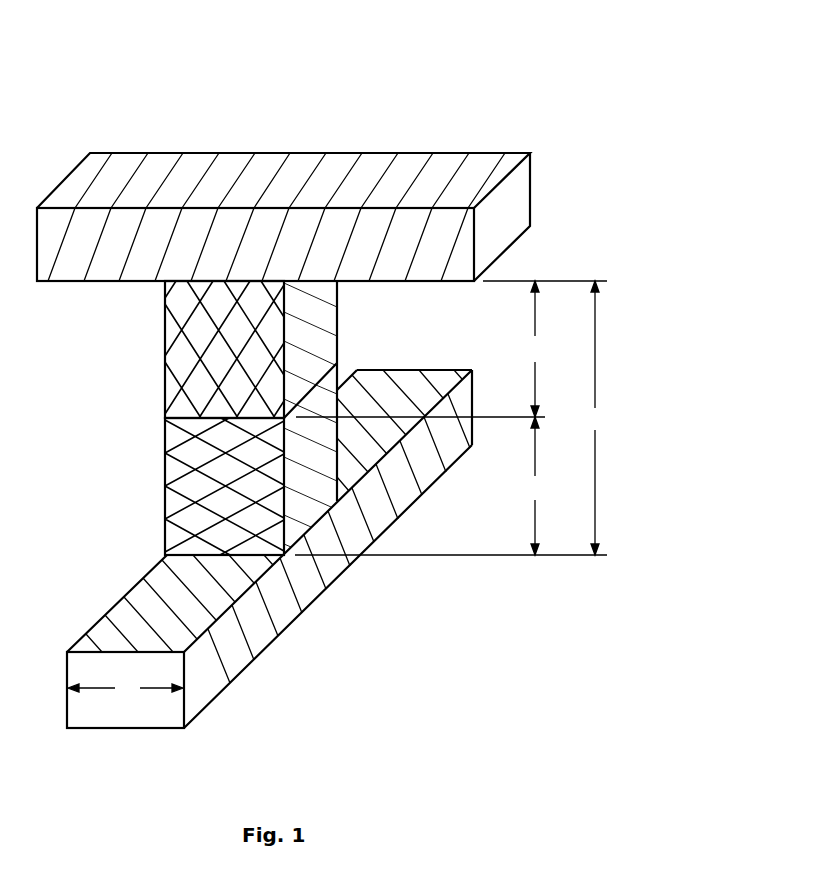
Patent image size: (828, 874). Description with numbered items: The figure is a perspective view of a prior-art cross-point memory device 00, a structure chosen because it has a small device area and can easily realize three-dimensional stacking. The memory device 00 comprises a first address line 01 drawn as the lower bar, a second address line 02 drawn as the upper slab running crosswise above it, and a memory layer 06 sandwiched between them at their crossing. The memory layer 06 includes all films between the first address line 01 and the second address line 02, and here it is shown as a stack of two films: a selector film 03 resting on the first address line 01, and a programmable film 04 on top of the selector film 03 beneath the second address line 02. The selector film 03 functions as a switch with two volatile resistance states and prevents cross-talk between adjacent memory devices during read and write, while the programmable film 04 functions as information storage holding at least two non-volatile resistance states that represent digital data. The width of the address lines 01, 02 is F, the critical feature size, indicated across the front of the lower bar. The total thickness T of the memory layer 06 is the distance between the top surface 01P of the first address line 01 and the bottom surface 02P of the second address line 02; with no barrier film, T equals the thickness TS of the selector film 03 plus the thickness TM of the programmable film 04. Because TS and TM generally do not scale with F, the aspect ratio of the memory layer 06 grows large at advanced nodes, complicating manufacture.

The memory device 00 is at (438, 87).
The first address line 01 is at (135, 718).
The top surface of the first address line 01P is at (420, 368).
The second address line 02 is at (268, 163).
The bottom surface of the second address line 02P is at (420, 283).
The selector film 03 is at (221, 470).
The programmable film 04 is at (167, 353).
The memory layer 06 is at (193, 418).
The width of the address lines F is at (125, 690).
The total thickness of the memory layer T is at (595, 418).
The thickness of the programmable film TM is at (451, 349).
The thickness of the selector film TS is at (451, 486).